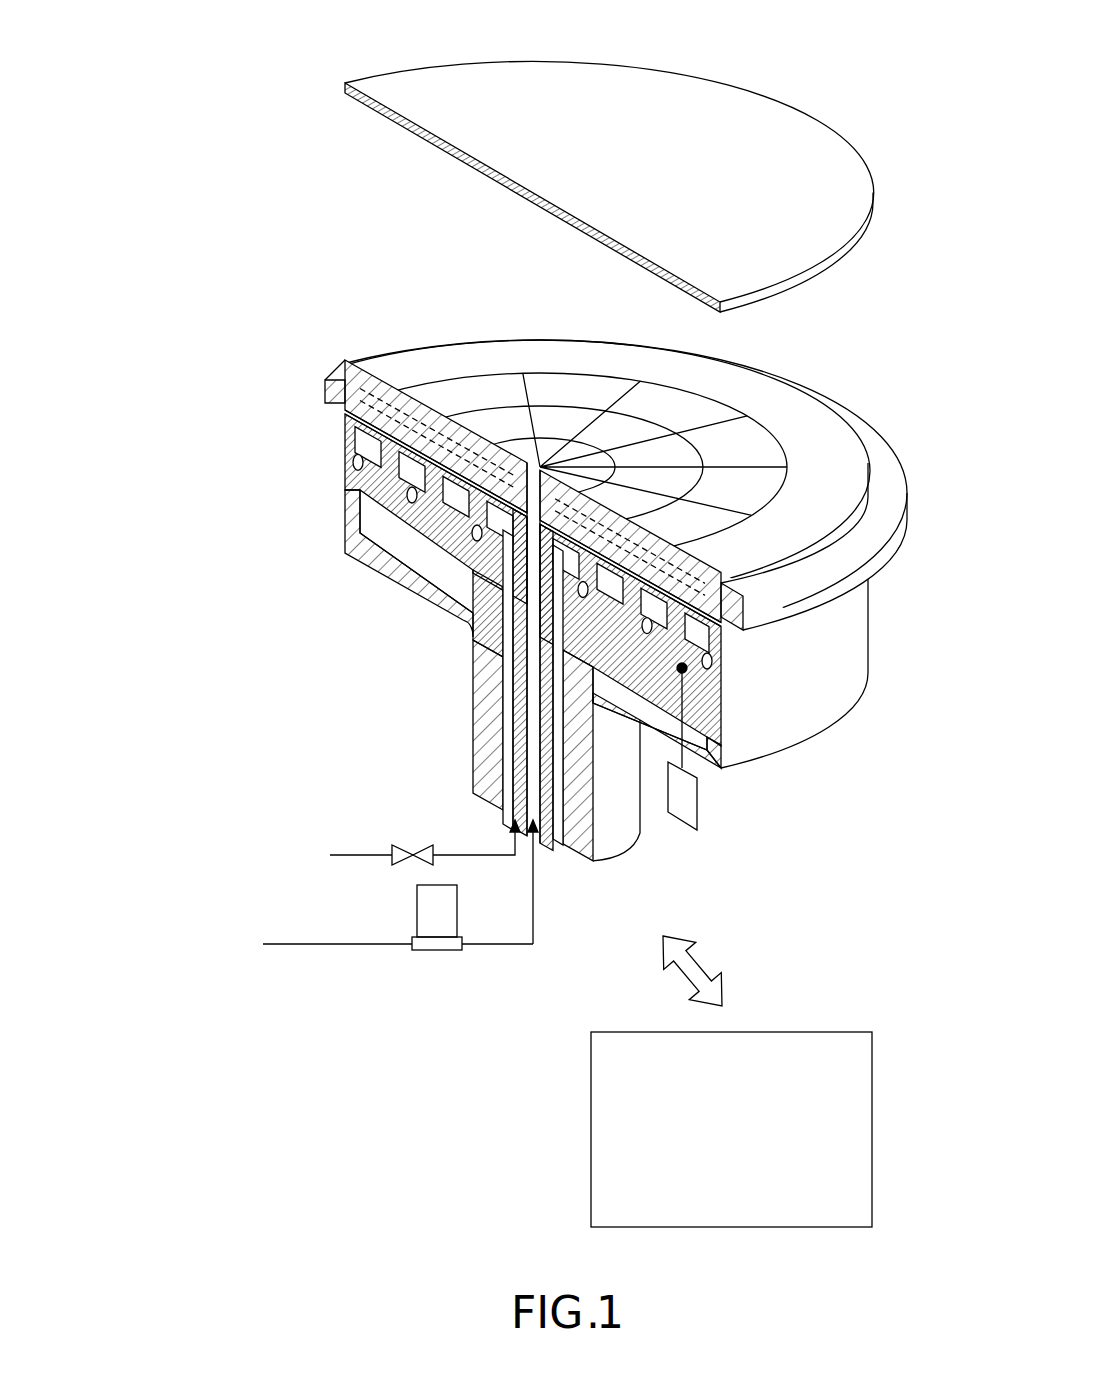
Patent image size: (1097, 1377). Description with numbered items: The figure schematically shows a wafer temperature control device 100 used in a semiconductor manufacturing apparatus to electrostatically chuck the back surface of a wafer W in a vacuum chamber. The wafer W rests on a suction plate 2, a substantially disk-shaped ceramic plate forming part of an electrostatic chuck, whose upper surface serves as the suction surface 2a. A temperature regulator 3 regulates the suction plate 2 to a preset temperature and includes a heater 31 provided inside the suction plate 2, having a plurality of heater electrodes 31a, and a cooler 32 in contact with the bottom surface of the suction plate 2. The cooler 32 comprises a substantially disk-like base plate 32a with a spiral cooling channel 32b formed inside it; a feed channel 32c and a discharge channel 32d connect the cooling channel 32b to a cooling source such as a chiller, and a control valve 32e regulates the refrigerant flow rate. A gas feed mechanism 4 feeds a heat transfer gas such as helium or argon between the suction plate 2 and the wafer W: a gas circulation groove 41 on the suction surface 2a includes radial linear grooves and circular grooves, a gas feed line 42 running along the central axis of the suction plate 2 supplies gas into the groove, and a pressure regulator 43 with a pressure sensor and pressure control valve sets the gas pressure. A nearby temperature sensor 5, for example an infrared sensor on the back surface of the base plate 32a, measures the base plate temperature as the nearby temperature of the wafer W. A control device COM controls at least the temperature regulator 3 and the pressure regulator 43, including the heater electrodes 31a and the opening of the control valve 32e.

The wafer W is at (540, 60).
The wafer temperature control device 100 is at (250, 228).
The suction plate 2 is at (574, 482).
The suction surface 2a is at (506, 355).
The gas circulation groove 41 is at (578, 400).
The heater 31 is at (587, 532).
The heater electrodes 31a is at (345, 403).
The temperature regulator 3 is at (574, 577).
The cooler 32 is at (529, 638).
The base plate 32a is at (345, 468).
The cooling channel 32b is at (450, 507).
The feed channel 32c is at (503, 676).
The discharge channel 32d is at (543, 742).
The control valve 32e is at (408, 848).
The gas feed line 42 is at (572, 816).
The gas feed mechanism 4 is at (294, 946).
The pressure regulator 43 is at (437, 952).
The nearby temperature sensor 5 is at (700, 800).
The control device COM is at (591, 1130).